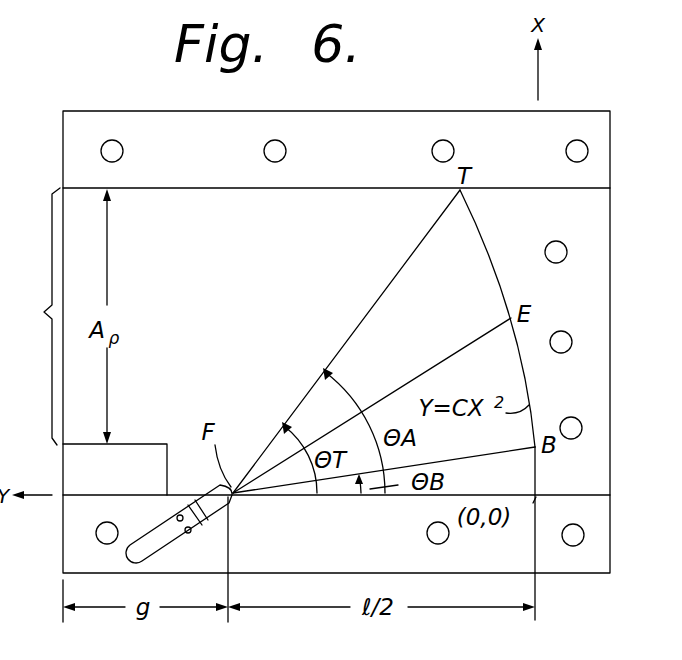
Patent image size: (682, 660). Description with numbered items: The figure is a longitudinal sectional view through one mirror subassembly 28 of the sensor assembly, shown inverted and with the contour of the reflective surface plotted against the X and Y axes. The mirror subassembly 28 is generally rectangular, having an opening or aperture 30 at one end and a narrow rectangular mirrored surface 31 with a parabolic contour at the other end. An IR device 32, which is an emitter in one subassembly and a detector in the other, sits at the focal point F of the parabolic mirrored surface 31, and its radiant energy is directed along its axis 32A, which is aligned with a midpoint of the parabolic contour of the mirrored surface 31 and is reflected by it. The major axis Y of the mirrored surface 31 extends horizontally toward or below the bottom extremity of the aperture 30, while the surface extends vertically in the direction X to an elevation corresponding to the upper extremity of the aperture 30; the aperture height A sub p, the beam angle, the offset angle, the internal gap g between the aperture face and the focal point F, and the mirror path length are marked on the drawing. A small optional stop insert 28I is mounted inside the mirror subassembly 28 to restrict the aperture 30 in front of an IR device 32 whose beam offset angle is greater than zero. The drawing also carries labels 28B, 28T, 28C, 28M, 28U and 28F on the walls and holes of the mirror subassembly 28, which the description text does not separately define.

The mirror subassembly 28 is at (479, 88).
The top band portion of plate 28B is at (343, 169).
The bottom band portion of plate 28T is at (338, 567).
The central region of plate 28C is at (256, 295).
The margin region of plate 28M is at (552, 309).
The stop insert 28I is at (143, 443).
The upper mounting holes 28U is at (123, 148).
The fastener holes 28F is at (264, 153).
The aperture 30 is at (34, 316).
The mirrored surface 31 is at (497, 281).
The IR device 32 is at (179, 544).
The axis 32A is at (372, 404).